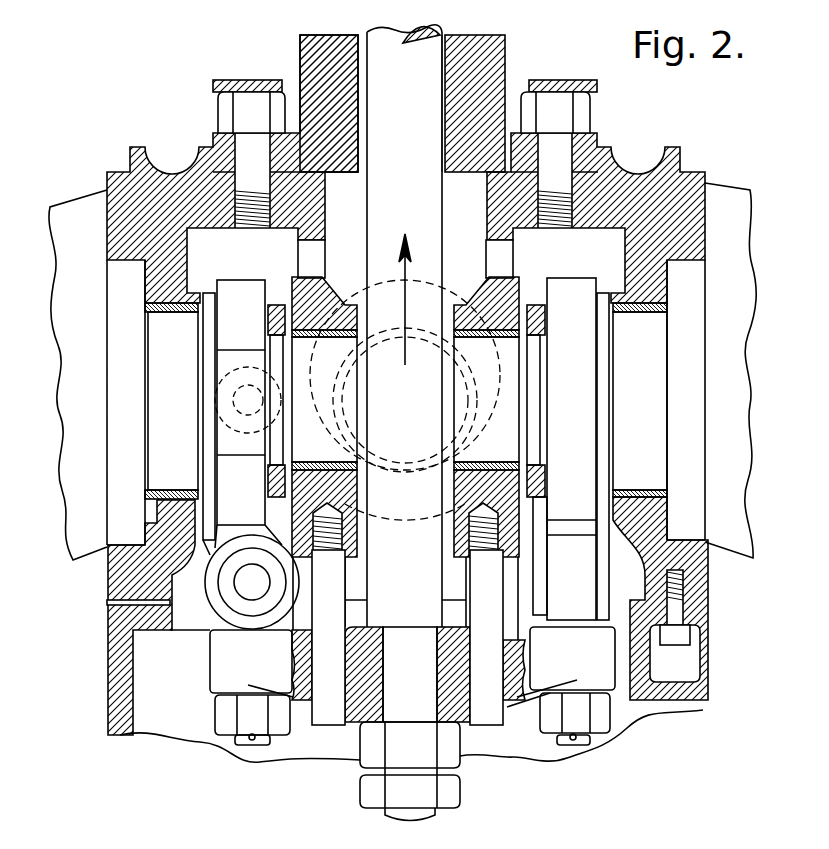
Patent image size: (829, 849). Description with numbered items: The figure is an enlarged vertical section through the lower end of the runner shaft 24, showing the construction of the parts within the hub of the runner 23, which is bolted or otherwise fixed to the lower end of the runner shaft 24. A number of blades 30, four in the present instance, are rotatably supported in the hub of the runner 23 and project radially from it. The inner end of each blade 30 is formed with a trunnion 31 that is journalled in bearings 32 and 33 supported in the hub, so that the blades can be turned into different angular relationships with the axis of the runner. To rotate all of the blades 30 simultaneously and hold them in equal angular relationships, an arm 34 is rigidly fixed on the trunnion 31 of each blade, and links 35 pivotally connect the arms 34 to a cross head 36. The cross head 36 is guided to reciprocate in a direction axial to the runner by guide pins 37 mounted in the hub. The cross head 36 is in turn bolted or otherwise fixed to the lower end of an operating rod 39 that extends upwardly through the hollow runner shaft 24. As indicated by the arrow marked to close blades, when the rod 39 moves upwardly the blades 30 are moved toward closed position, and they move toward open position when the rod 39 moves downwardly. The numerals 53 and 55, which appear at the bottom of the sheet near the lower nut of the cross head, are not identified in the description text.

The runner hub 23 is at (682, 158).
The runner shaft 24 is at (506, 52).
The blade 30 is at (402, 371).
The trunnion 31 is at (407, 401).
The bearing 32 is at (193, 318).
The bearing 33 is at (339, 338).
The arm 34 is at (232, 413).
The link 35 is at (287, 538).
The cross head 36 is at (367, 702).
The guide pin 37 is at (408, 637).
The operating rod 39 is at (405, 326).
The nut 53 is at (344, 785).
The lock nut 55 is at (380, 808).